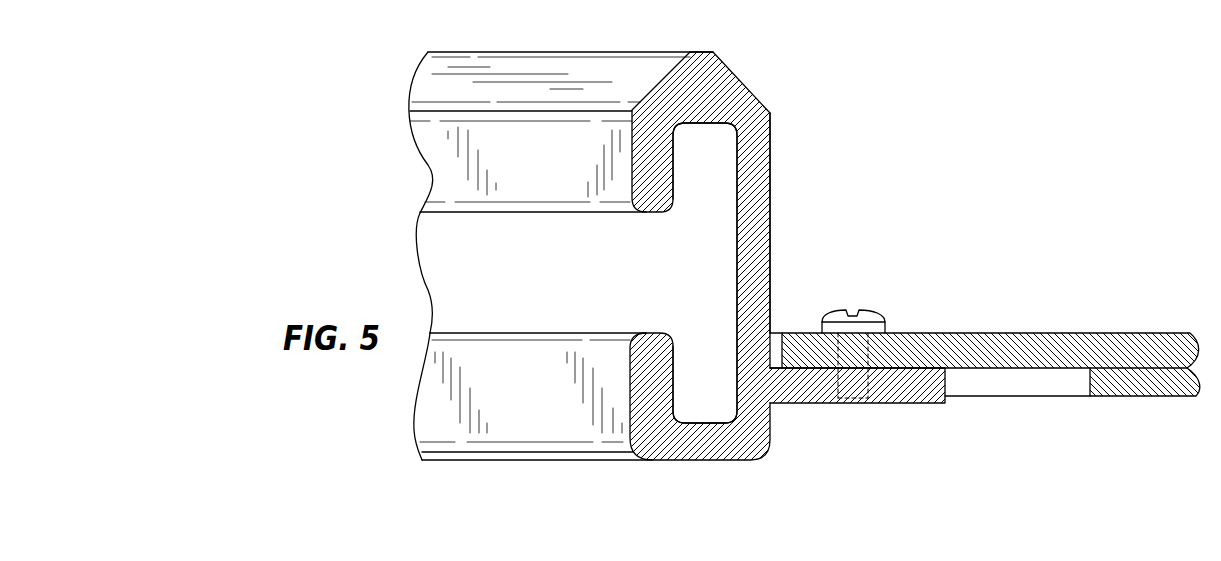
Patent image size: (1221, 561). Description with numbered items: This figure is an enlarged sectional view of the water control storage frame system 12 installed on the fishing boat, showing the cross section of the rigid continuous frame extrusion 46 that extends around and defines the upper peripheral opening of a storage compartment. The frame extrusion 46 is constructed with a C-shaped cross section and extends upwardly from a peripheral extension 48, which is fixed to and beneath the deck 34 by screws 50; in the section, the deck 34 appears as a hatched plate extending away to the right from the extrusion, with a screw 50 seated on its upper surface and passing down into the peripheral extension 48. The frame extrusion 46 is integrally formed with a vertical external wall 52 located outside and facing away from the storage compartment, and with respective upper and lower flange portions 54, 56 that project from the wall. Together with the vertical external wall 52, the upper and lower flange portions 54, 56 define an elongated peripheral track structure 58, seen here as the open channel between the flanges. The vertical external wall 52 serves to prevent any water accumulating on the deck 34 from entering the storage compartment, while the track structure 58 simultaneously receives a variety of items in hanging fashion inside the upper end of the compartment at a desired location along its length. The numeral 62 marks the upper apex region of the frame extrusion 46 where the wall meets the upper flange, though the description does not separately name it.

The water control storage frame system 12 is at (790, 138).
The deck 34 is at (1020, 332).
The frame extrusion 46 is at (737, 77).
The peripheral extension 48 is at (917, 386).
The screw 50 is at (867, 316).
The vertical external wall 52 is at (772, 238).
The upper flange portion 54 is at (559, 213).
The lower flange portion 56 is at (515, 333).
The track structure 58 is at (702, 280).
The apex portion 62 is at (697, 52).